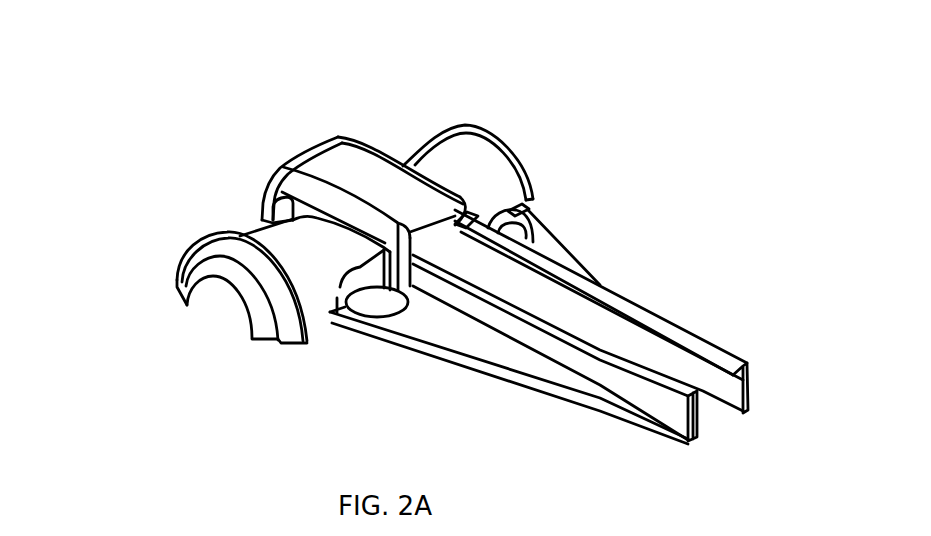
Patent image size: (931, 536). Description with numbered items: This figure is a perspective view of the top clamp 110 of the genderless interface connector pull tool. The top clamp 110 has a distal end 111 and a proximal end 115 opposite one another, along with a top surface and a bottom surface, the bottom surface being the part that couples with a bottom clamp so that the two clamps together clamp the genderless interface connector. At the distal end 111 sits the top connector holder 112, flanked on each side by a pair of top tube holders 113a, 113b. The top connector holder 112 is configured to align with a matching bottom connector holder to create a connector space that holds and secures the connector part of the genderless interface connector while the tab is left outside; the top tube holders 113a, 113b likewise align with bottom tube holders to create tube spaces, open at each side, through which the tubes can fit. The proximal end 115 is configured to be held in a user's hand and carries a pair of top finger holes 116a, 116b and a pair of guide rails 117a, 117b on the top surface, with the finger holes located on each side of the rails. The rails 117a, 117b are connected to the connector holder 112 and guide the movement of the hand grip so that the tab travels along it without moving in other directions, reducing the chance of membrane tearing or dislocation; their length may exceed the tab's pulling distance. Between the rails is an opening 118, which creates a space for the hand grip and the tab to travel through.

The top clamp 110 is at (108, 71).
The distal end 111 is at (263, 197).
The top connector holder 112 is at (330, 150).
The top tube holder 113a is at (222, 278).
The top tube holder 113b is at (477, 154).
The proximal end 115 is at (525, 367).
The top finger hole 116a is at (373, 302).
The top finger hole 116b is at (520, 205).
The guide rail 117a is at (668, 378).
The guide rail 117b is at (680, 343).
The opening 118 is at (690, 373).